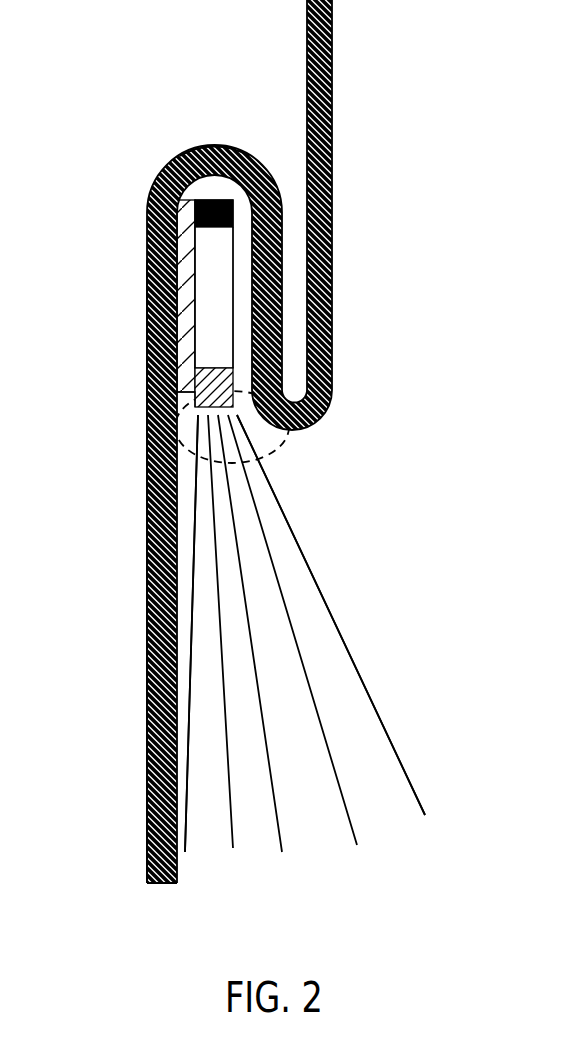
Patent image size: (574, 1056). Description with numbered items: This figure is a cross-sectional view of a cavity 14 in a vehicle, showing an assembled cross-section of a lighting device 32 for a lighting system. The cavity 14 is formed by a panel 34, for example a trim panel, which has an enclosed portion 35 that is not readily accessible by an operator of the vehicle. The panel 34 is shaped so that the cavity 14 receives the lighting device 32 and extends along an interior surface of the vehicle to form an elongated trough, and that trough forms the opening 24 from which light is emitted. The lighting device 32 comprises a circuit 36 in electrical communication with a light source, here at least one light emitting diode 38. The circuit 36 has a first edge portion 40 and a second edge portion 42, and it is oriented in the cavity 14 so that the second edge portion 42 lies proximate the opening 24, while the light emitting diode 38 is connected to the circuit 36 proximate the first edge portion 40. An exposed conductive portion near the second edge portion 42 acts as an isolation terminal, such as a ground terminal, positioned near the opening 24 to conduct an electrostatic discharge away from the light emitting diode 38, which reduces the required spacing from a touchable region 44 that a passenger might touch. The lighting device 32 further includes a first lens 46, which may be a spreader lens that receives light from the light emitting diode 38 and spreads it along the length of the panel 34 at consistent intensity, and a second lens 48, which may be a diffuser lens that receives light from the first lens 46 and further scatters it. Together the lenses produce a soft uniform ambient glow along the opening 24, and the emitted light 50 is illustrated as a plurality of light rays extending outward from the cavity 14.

The cavity 14 is at (128, 248).
The opening 24 is at (263, 438).
The lighting device 32 is at (215, 317).
The panel 34 is at (325, 175).
The enclosed portion 35 is at (208, 145).
The circuit 36 is at (183, 320).
The light emitting diode 38 is at (222, 200).
The first edge portion 40 is at (175, 150).
The second edge portion 42 is at (187, 398).
The touchable region 44 is at (278, 505).
The first lens 46 is at (225, 270).
The second lens 48 is at (225, 380).
The emitted light 50 is at (257, 597).